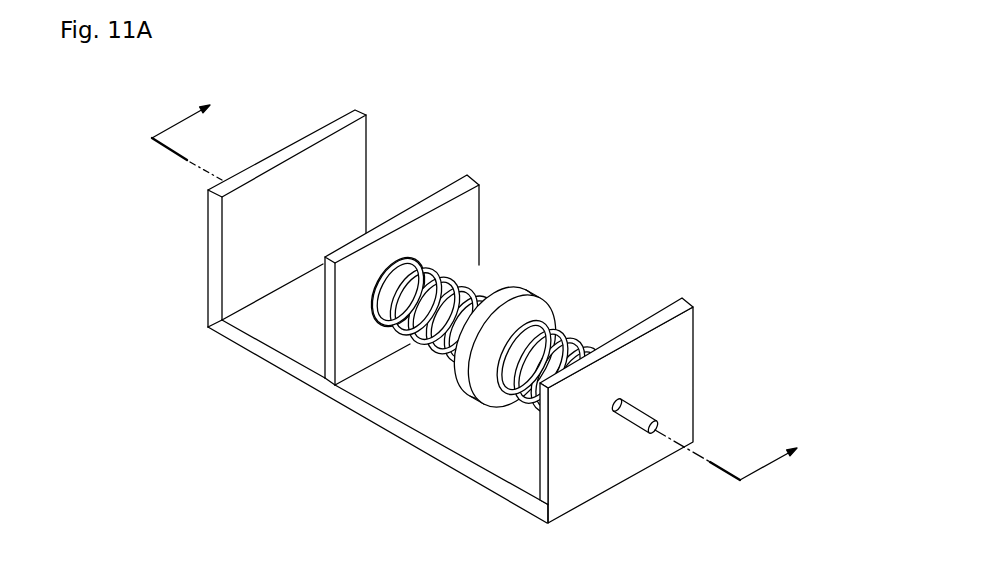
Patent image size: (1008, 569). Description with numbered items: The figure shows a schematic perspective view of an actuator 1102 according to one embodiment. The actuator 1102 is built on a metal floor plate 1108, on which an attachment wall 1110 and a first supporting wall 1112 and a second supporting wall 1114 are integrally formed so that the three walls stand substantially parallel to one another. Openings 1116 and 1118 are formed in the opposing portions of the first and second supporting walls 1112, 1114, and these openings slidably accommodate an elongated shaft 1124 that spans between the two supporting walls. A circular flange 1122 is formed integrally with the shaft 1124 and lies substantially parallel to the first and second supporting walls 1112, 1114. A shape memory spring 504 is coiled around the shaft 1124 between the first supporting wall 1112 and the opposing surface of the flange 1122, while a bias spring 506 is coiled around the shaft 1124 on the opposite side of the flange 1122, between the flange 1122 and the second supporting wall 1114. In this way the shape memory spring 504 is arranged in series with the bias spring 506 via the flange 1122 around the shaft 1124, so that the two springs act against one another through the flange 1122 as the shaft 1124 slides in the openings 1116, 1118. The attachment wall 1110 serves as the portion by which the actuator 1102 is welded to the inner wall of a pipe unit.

The actuator 1102 is at (600, 222).
The metal floor plate 1108 is at (375, 393).
The attachment wall 1110 is at (295, 148).
The first supporting wall 1112 is at (457, 185).
The second supporting wall 1114 is at (687, 322).
The opening 1116 is at (390, 262).
The opening 1118 is at (618, 413).
The circular flange 1122 is at (467, 393).
The elongated shaft 1124 is at (650, 406).
The shape memory spring 504 is at (437, 262).
The bias spring 506 is at (577, 333).